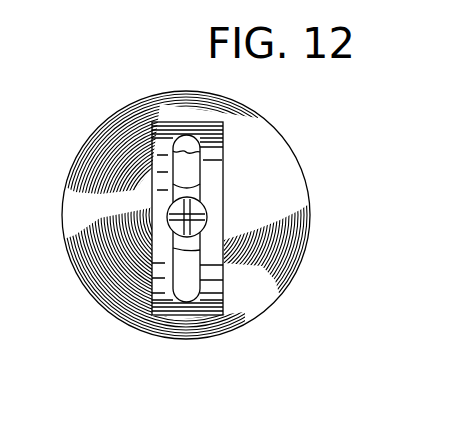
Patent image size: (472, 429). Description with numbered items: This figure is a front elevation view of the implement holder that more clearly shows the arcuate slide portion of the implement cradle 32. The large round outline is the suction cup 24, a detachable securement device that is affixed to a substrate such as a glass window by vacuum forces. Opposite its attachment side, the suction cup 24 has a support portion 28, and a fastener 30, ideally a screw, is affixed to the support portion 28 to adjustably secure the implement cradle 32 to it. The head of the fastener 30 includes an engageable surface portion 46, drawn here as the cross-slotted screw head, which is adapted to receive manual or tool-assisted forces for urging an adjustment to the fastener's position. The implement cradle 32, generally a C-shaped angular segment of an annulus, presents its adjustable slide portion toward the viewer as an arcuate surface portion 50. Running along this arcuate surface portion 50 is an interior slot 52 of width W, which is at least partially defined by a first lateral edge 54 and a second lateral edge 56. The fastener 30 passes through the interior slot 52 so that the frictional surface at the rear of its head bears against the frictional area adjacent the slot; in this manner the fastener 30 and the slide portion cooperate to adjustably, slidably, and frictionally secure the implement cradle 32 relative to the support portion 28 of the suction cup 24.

The suction cup 24 is at (298, 162).
The support portion 28 is at (173, 248).
The fastener 30 is at (170, 205).
The implement cradle 32 is at (210, 163).
The engageable surface portion 46 is at (207, 217).
The arcuate surface portion 50 is at (209, 173).
The interior slot 52 is at (178, 148).
The first lateral edge 54 is at (173, 179).
The second lateral edge 56 is at (173, 168).